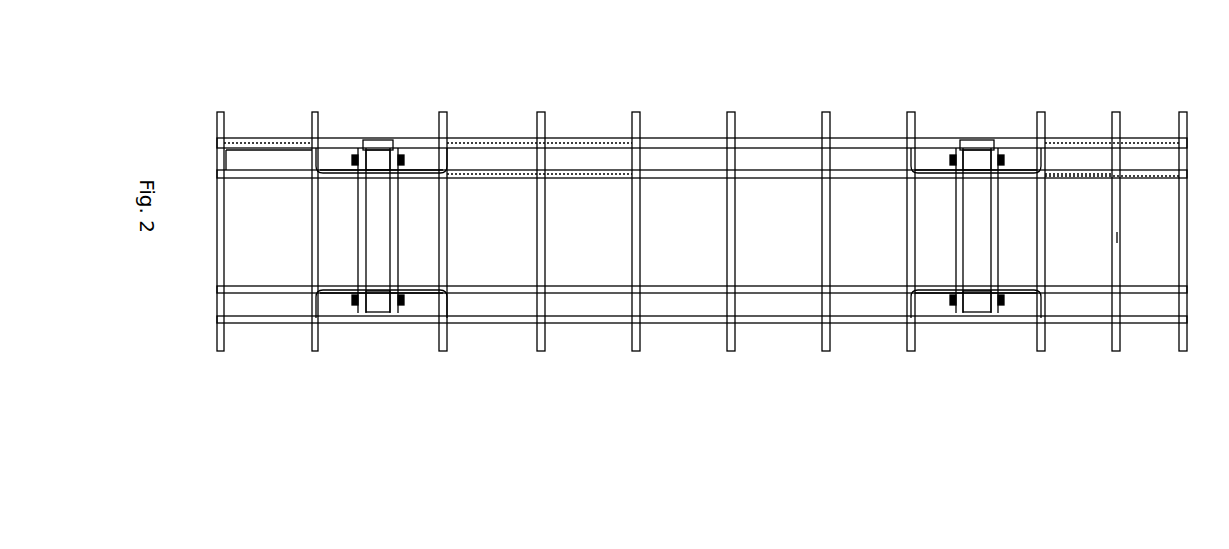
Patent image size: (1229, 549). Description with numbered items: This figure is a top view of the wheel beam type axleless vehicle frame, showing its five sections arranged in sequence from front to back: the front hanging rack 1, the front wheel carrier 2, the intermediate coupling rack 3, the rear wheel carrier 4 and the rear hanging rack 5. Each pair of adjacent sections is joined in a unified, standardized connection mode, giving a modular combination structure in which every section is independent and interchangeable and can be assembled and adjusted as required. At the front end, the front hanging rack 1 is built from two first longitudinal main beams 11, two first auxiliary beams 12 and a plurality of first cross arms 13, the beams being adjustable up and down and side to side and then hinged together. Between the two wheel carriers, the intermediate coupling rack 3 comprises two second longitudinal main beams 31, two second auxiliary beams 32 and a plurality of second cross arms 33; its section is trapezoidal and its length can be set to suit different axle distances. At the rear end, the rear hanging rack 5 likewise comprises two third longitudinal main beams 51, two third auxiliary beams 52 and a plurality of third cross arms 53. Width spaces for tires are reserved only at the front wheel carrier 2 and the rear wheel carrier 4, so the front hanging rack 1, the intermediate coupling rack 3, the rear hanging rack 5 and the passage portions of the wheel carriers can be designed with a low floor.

The front hanging rack 1 is at (258, 76).
The first longitudinal main beam 11 is at (265, 76).
The first auxiliary beam 12 is at (303, 76).
The first cross arm 13 is at (332, 76).
The front wheel carrier 2 is at (395, 76).
The intermediate coupling rack 3 is at (655, 76).
The second longitudinal main beam 31 is at (532, 76).
The second auxiliary beam 32 is at (568, 76).
The second cross arm 33 is at (798, 76).
The rear wheel carrier 4 is at (987, 76).
The rear hanging rack 5 is at (1073, 76).
The third longitudinal main beam 51 is at (1110, 76).
The third auxiliary beam 52 is at (1147, 76).
The third cross arm 53 is at (1213, 76).